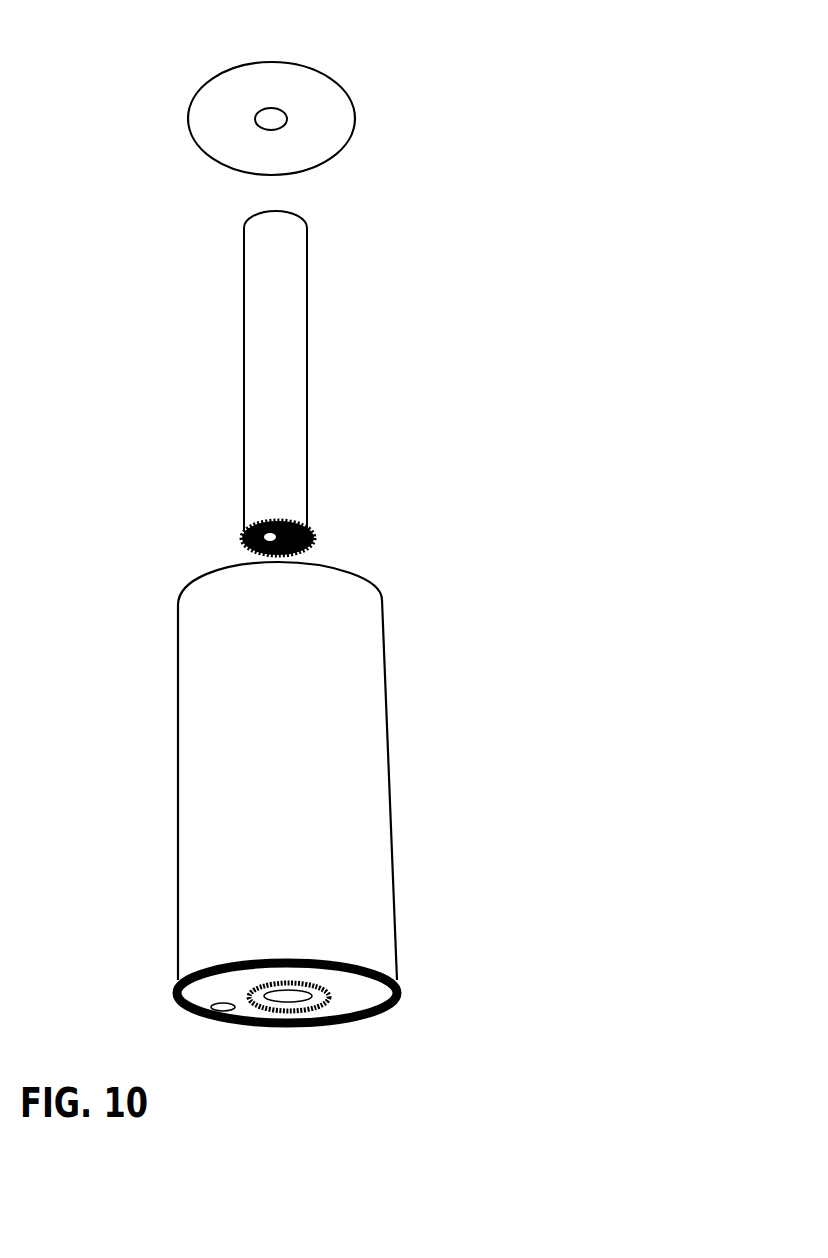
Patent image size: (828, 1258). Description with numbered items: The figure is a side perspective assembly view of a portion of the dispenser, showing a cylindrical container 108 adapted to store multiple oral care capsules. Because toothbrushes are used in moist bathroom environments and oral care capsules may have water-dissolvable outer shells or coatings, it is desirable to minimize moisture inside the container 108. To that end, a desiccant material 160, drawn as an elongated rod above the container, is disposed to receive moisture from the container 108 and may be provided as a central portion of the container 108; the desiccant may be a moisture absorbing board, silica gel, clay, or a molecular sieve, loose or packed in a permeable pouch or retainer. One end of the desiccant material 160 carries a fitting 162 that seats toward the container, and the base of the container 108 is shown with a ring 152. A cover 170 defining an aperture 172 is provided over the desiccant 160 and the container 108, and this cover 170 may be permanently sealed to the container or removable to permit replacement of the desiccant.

The container 108 is at (390, 788).
The base ring 152 is at (347, 1026).
The desiccant material 160 is at (308, 371).
The tube end fitting 162 is at (245, 545).
The cover 170 is at (355, 110).
The aperture 172 is at (280, 108).